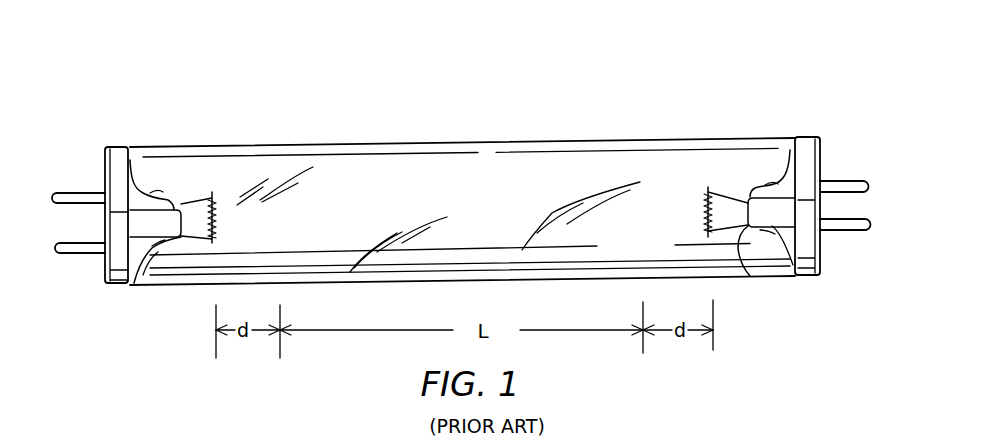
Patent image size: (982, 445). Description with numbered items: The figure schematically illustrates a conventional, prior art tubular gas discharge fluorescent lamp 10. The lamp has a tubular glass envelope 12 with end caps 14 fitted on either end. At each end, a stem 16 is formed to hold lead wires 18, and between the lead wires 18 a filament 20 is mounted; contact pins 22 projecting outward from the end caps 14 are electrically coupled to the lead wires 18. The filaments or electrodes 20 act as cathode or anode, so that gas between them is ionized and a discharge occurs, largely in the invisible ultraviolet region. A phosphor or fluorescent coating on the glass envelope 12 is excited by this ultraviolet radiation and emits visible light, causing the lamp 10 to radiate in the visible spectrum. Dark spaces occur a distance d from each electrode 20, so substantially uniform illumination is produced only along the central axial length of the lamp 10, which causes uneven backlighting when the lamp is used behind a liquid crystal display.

The fluorescent lamp 10 is at (554, 129).
The tubular glass envelope 12 is at (342, 146).
The end caps 14 is at (118, 147).
The stems 16 is at (162, 197).
The lead wires 18 is at (194, 238).
The filaments 20 is at (217, 218).
The contact pins 22 is at (71, 192).